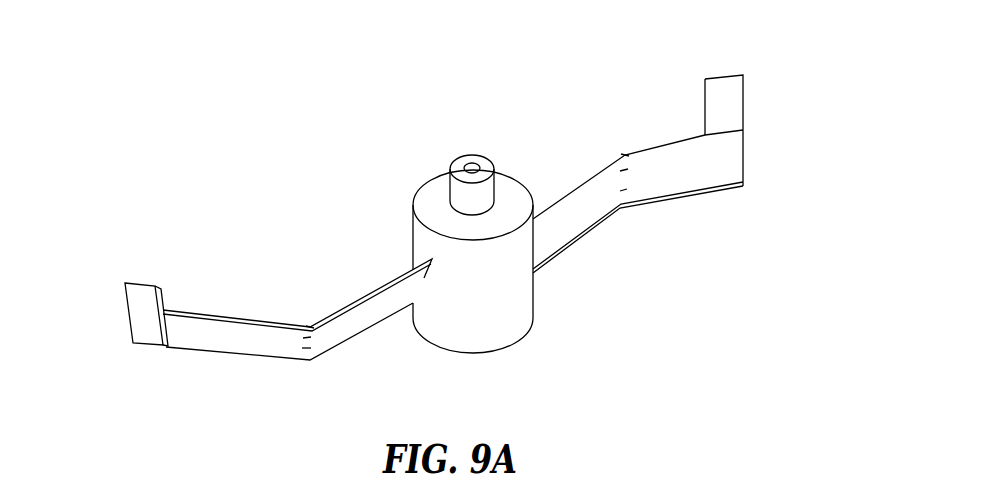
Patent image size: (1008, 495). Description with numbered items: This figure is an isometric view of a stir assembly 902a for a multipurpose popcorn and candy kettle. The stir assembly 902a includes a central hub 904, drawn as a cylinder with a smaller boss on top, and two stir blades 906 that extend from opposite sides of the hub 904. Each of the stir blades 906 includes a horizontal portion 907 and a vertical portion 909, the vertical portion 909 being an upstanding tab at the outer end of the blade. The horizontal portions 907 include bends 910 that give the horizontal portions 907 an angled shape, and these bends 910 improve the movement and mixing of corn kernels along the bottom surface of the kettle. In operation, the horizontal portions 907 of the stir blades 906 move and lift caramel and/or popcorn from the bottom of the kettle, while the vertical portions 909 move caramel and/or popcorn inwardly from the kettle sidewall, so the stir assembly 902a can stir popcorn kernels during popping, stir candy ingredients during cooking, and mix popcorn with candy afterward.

The stir assembly 902a is at (427, 100).
The hub 904 is at (510, 186).
The stir blades 906 is at (157, 373).
The horizontal portions 907 is at (304, 347).
The vertical portions 909 is at (135, 316).
The bends 910 is at (310, 324).